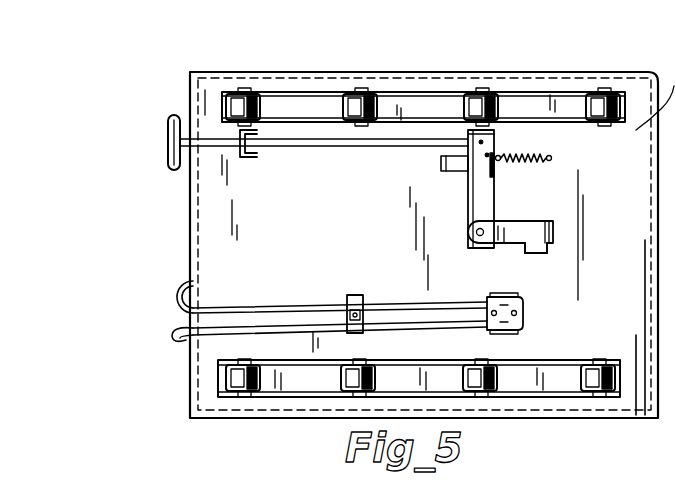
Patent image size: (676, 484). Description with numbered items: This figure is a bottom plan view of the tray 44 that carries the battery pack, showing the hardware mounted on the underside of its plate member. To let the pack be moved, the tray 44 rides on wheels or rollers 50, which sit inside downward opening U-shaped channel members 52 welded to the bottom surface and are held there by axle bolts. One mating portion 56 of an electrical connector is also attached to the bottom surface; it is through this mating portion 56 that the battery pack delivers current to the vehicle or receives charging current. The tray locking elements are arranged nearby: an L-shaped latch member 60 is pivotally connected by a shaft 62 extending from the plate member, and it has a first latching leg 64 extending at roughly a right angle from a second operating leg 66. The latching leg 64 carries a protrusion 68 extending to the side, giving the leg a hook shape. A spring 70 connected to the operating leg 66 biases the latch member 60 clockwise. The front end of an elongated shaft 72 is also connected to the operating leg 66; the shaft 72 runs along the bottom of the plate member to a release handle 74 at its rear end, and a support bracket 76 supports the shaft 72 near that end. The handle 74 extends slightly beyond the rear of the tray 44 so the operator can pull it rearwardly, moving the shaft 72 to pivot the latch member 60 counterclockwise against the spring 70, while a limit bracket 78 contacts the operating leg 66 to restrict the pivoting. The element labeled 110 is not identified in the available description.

The tray 44 is at (178, 72).
The rollers 50 is at (352, 119).
The U-shaped channel members 52 is at (410, 123).
The mating portion of electrical connector 56 is at (523, 300).
The L-shaped latch member 60 is at (522, 218).
The shaft 62 is at (465, 235).
The first latching leg 64 is at (535, 232).
The second operating leg 66 is at (477, 198).
The protrusion 68 is at (548, 250).
The spring 70 is at (552, 160).
The elongated shaft 72 is at (304, 146).
The release handle 74 is at (168, 140).
The support bracket 76 is at (238, 155).
The limit bracket 78 is at (441, 168).
The panel 110 is at (497, 483).